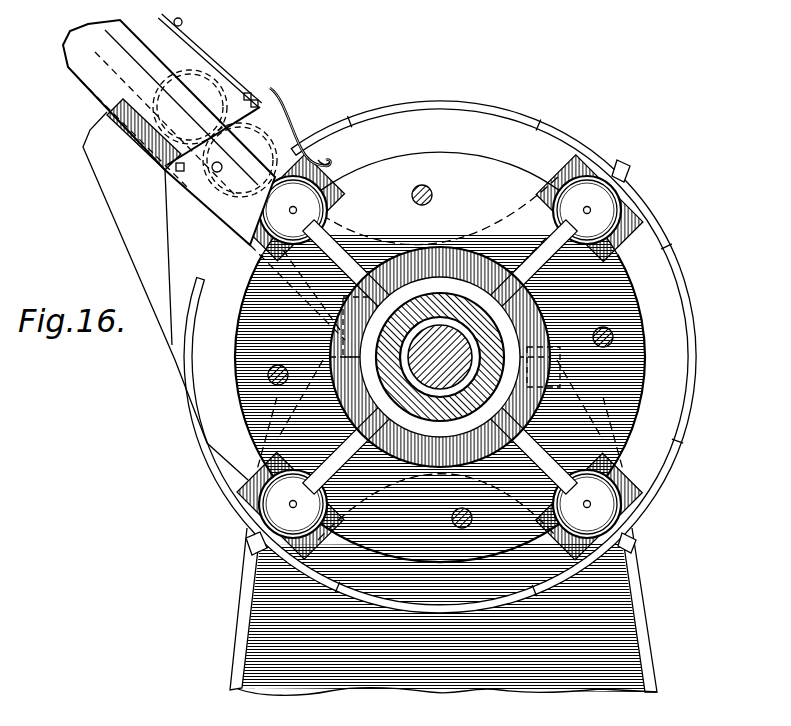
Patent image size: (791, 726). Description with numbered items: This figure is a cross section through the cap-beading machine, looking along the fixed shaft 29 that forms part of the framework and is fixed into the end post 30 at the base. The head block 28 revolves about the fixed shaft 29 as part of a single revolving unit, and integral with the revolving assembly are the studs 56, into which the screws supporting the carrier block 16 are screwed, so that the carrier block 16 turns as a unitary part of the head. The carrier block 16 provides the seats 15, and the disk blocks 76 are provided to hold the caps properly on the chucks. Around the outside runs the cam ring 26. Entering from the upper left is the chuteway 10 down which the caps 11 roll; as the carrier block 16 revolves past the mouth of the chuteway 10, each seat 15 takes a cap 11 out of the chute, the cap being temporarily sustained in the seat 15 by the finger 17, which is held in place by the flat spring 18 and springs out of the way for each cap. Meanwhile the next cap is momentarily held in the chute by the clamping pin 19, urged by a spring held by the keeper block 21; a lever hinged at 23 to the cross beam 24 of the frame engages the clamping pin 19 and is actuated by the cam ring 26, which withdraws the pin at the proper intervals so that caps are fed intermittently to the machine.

The chuteway 10 is at (78, 40).
The caps 11 is at (196, 82).
The seats 15 is at (592, 264).
The block 16 is at (424, 163).
The finger 17 is at (330, 163).
The flat spring 18 is at (283, 106).
The clamping pin 19 is at (197, 232).
The keeper block 21 is at (96, 99).
The hinge 23 is at (188, 38).
The cross beam 24 is at (133, 150).
The cam ring 26 is at (533, 116).
The head block 28 is at (420, 448).
The fixed shaft 29 is at (475, 422).
The end post 30 is at (578, 647).
The studs 56 is at (432, 190).
The disk blocks 76 is at (604, 202).